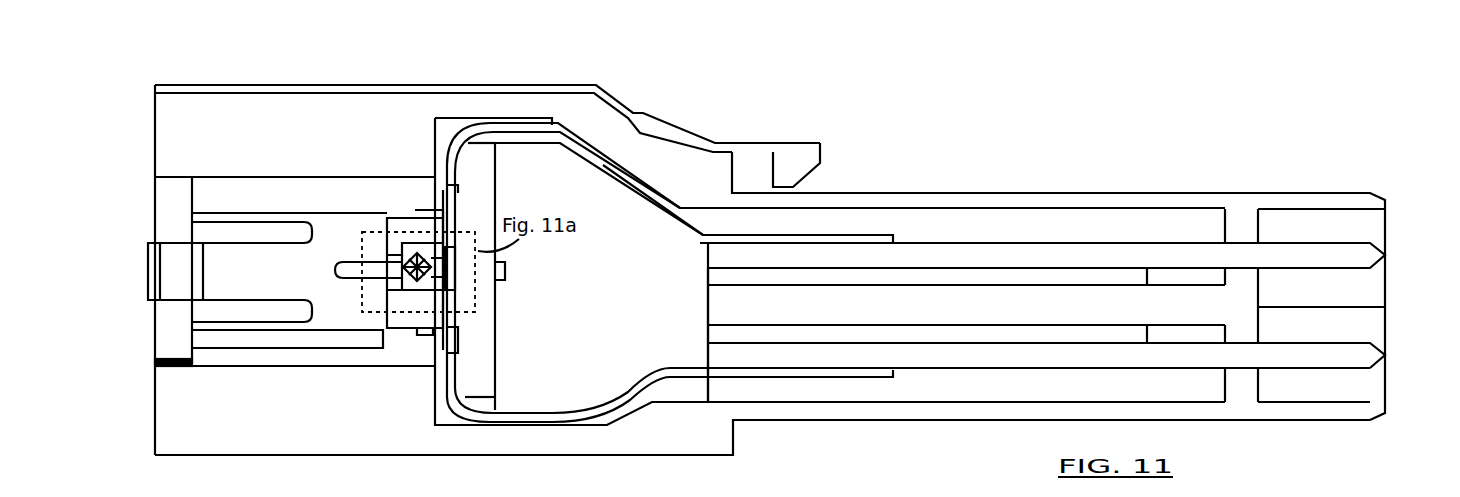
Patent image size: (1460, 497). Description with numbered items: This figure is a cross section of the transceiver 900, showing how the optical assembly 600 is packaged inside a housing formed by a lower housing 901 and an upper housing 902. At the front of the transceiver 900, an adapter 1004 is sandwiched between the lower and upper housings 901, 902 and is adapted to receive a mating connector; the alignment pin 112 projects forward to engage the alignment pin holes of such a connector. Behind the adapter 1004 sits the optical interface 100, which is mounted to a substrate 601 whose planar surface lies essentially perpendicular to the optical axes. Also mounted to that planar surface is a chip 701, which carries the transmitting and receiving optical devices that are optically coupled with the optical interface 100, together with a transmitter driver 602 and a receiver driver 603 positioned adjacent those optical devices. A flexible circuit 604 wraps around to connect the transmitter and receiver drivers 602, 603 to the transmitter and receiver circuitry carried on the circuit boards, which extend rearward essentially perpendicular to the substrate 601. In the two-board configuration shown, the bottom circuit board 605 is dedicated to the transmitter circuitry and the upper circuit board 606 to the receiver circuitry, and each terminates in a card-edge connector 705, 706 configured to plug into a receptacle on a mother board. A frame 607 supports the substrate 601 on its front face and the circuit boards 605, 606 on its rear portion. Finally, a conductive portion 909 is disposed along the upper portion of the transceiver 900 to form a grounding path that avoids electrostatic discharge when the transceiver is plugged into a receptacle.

The upper housing 902 is at (163, 134).
The conductive portion 909 is at (353, 91).
The flexible circuit 604 is at (478, 130).
The adapter 1004 is at (263, 197).
The optical interface 100 is at (378, 220).
The alignment pin 112 is at (341, 272).
The receiver driver 603 is at (452, 214).
The chip 701 is at (457, 272).
The transmitter driver 602 is at (453, 332).
The substrate 601 is at (485, 377).
The optical assembly 600 is at (428, 347).
The lower housing 901 is at (255, 428).
The transceiver 900 is at (1066, 155).
The upper circuit board 606 is at (915, 252).
The frame 607 is at (1205, 303).
The bottom circuit board 605 is at (915, 362).
The card-edge connector 706 is at (1380, 256).
The card-edge connector 705 is at (1380, 355).